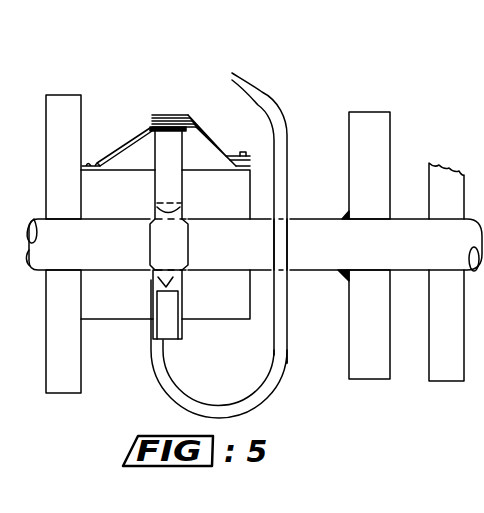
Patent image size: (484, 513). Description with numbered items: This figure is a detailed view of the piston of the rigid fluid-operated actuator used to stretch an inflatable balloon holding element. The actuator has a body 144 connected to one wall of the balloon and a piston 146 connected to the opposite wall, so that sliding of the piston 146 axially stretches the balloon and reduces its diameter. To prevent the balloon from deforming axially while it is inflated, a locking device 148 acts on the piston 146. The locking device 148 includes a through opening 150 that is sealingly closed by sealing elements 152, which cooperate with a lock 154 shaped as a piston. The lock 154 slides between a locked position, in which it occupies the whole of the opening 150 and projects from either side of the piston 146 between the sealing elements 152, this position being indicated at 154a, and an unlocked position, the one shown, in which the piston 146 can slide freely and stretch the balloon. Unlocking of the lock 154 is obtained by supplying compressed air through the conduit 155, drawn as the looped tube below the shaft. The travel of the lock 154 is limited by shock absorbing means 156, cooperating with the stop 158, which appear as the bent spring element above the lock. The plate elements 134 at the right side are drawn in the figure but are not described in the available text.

The support plate 134 is at (371, 346).
The body 144 is at (72, 107).
The piston 146 is at (262, 250).
The locking device 148 is at (222, 275).
The through opening 150 is at (162, 248).
The sealing elements 152 is at (105, 190).
The lock 154 is at (172, 162).
The locked position of the lock 154a is at (173, 280).
The conduit 155 is at (262, 387).
The shock absorbing means 156 is at (150, 128).
The stop 158 is at (221, 142).